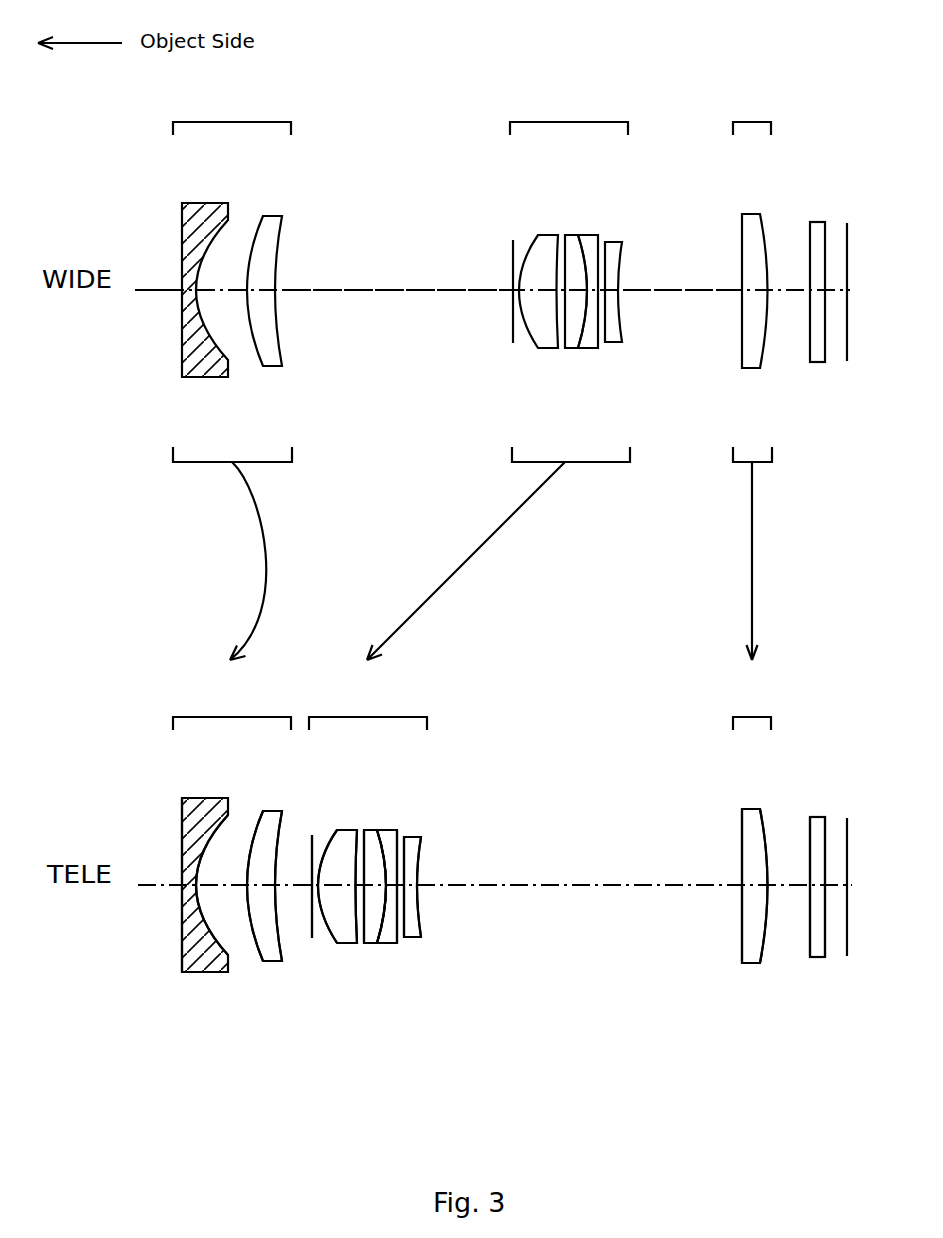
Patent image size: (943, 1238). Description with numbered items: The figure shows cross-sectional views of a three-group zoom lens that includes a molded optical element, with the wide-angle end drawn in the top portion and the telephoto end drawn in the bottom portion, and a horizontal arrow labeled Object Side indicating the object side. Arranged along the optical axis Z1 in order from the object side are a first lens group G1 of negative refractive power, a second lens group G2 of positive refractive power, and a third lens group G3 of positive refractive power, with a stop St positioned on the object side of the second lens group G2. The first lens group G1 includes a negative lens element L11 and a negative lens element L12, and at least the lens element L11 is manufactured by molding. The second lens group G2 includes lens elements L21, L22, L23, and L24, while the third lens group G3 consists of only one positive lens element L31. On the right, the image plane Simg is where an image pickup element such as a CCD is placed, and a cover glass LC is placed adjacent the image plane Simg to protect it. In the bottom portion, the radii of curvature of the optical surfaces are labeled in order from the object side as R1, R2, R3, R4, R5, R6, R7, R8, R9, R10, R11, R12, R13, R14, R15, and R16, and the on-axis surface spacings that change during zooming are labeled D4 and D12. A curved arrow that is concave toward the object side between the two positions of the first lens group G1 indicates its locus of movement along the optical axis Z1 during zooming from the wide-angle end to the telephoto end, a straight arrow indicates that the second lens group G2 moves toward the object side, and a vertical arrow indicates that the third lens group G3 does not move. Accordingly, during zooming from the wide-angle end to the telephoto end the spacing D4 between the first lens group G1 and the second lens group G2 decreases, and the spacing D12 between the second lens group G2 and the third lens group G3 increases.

The first lens group G1 is at (232, 411).
The second lens group G2 is at (468, 411).
The third lens group G3 is at (752, 411).
The lens element L11 is at (205, 562).
The lens element L12 is at (268, 565).
The lens element L21 is at (437, 548).
The lens element L22 is at (467, 564).
The lens element L23 is at (493, 548).
The lens element L24 is at (522, 561).
The positive lens element L31 is at (749, 564).
The cover glass LC is at (817, 563).
The image plane Simg is at (834, 548).
The stop St is at (409, 564).
The optical axis Z1 is at (155, 319).
The on-axis surface spacing D4 is at (397, 577).
The on-axis surface spacing D12 is at (652, 577).
The radius of curvature R1 is at (183, 972).
The radius of curvature R2 is at (216, 962).
The radius of curvature R3 is at (256, 948).
The radius of curvature R4 is at (285, 946).
The radius of curvature R5 is at (309, 938).
The radius of curvature R6 is at (333, 942).
The radius of curvature R7 is at (355, 945).
The radius of curvature R8 is at (365, 943).
The radius of curvature R9 is at (384, 945).
The radius of curvature R10 is at (396, 945).
The radius of curvature R11 is at (406, 937).
The radius of curvature R12 is at (420, 910).
The radius of curvature R13 is at (742, 950).
The radius of curvature R14 is at (764, 953).
The radius of curvature R15 is at (812, 950).
The radius of curvature R16 is at (833, 955).